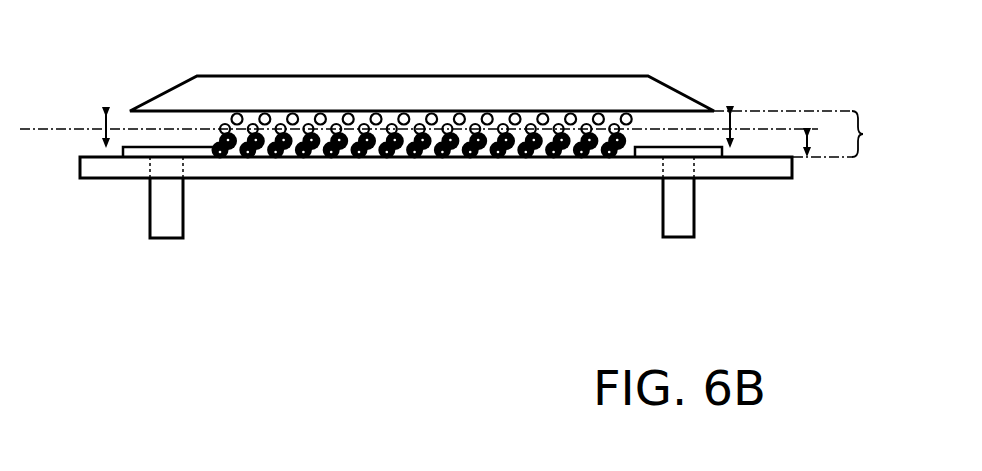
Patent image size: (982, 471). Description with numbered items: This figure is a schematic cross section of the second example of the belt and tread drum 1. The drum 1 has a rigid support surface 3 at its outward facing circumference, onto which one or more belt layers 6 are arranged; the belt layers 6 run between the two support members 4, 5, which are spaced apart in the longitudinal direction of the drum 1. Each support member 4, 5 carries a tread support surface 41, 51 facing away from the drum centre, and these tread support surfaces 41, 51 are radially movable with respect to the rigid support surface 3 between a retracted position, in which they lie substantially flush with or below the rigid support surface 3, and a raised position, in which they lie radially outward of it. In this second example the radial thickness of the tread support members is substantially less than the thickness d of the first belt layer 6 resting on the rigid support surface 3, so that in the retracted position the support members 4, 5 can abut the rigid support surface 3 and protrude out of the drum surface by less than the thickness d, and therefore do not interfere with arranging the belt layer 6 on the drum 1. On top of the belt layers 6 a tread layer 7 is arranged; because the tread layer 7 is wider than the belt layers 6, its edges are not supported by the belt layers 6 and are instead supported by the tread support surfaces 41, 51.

The belt and tread drum 1 is at (432, 167).
The rigid support surface 3 is at (93, 157).
The support member 4 is at (172, 223).
The tread support surface 41 is at (138, 150).
The support member 5 is at (673, 215).
The tread support surface 51 is at (710, 150).
The belt layer 6 is at (810, 134).
The tread layer 7 is at (587, 92).
The thickness of the first belt layer d is at (813, 142).